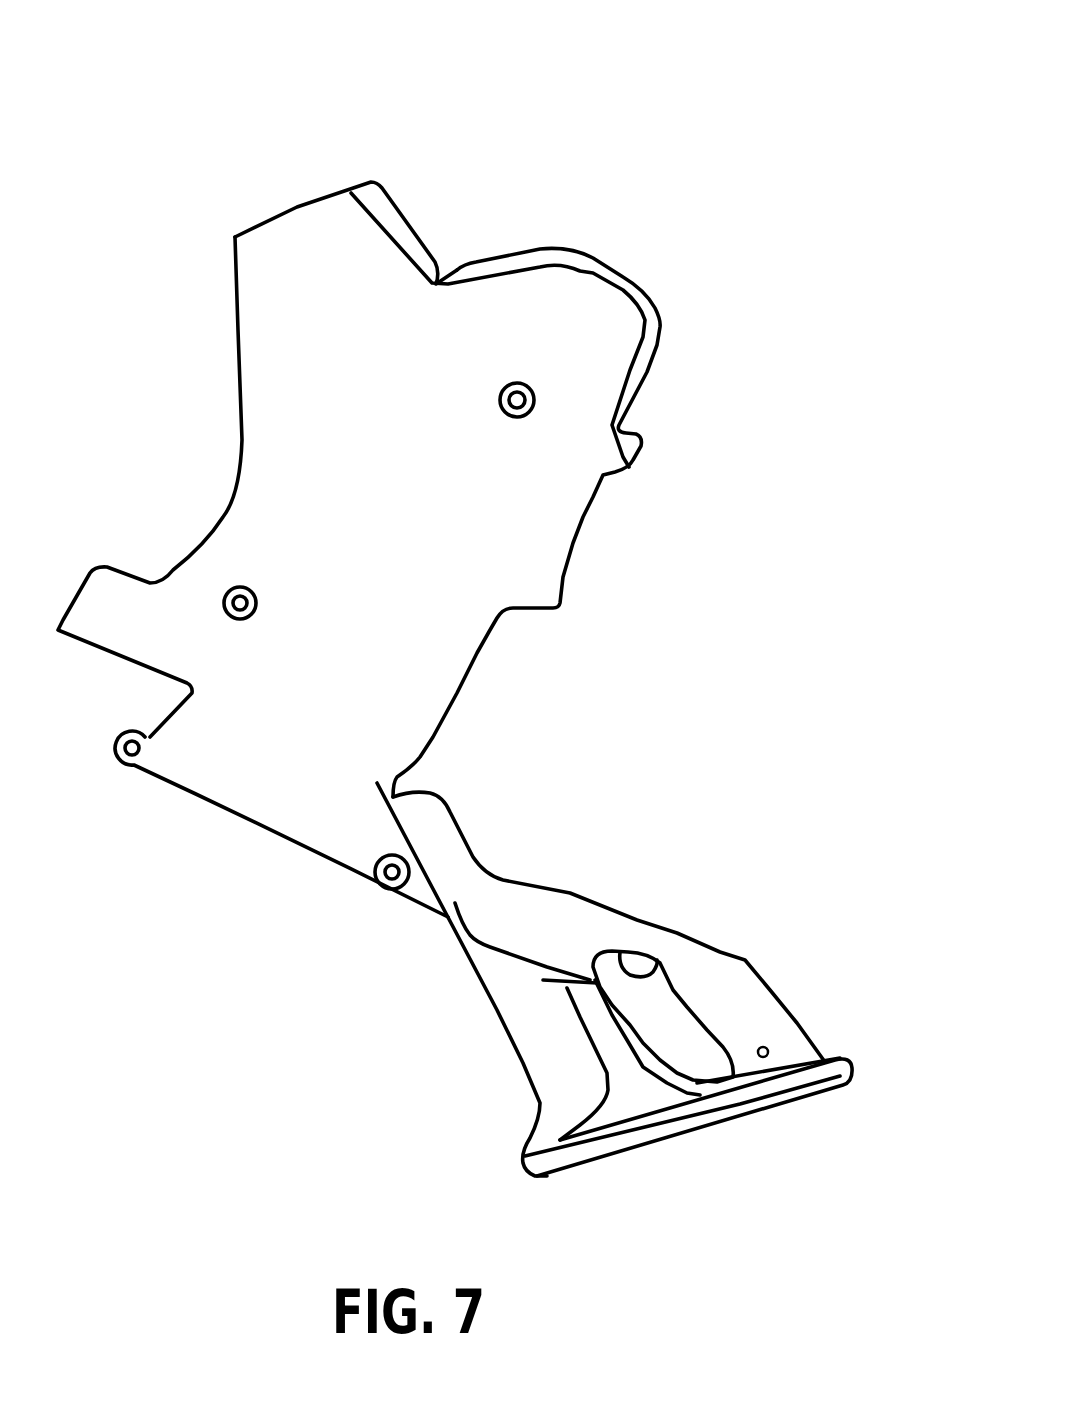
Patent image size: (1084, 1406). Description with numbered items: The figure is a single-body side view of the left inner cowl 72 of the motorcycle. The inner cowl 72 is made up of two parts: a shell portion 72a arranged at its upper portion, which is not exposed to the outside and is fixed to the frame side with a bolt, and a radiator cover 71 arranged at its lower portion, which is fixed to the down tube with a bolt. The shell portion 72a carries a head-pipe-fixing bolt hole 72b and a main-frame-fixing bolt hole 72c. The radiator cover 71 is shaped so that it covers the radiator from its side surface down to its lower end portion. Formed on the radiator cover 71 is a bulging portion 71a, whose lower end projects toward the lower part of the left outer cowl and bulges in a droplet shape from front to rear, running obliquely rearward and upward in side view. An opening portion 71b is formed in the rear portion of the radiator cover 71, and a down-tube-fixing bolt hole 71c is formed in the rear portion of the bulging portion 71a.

The inner cowl 72 is at (351, 461).
The shell portion 72a is at (260, 370).
The head-pipe-fixing bolt hole 72b is at (237, 590).
The main-frame-fixing bolt hole 72c is at (506, 399).
The radiator cover 71 is at (649, 979).
The bulging portion 71a is at (558, 1118).
The opening portion 71b is at (653, 970).
The down-tube-fixing bolt hole 71c is at (768, 1048).